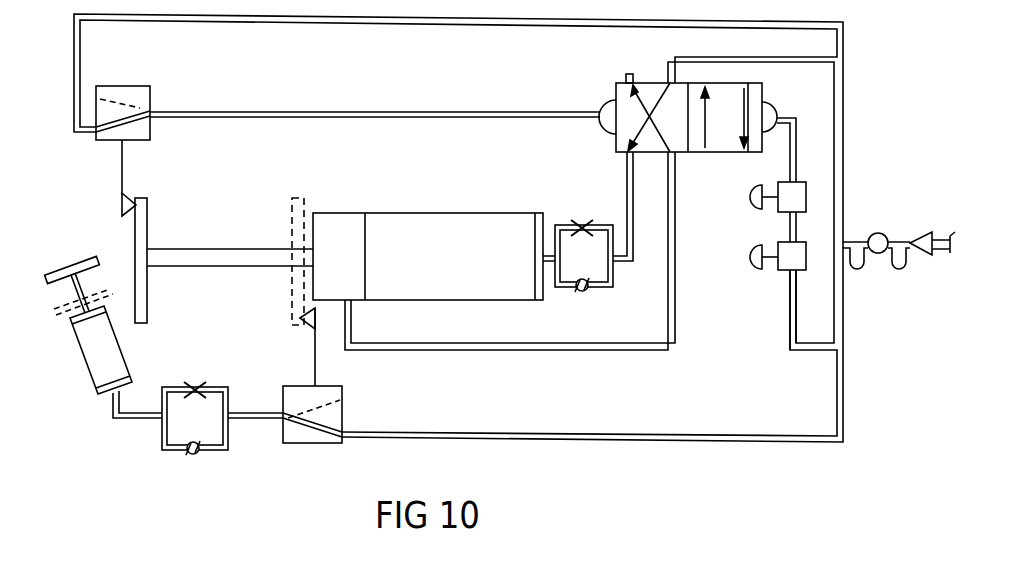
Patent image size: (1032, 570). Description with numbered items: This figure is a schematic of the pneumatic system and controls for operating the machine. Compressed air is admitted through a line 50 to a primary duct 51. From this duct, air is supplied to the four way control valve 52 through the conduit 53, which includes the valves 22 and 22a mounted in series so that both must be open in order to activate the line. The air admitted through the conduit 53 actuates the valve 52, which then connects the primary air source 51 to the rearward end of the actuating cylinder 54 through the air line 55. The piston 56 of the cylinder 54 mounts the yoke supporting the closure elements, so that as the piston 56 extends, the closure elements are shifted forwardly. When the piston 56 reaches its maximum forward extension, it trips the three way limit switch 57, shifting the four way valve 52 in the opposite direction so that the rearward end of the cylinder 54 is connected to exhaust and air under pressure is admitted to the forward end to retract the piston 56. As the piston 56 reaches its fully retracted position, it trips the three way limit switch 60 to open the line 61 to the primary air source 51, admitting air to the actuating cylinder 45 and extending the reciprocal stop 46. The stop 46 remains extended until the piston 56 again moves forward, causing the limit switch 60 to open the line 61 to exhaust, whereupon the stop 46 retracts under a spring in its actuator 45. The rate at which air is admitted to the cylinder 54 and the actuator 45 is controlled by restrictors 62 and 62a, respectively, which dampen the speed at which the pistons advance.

The primary duct 51 is at (843, 95).
The three way limit switch 57 is at (140, 130).
The piston 56 is at (212, 257).
The reciprocal stop 46 is at (70, 266).
The actuating cylinder 45 is at (123, 348).
The restrictor 62a is at (196, 388).
The line 61 is at (253, 423).
The three way limit switch 60 is at (342, 392).
The actuating cylinder 54 is at (455, 208).
The restrictor 62 is at (583, 224).
The air line 55 is at (627, 166).
The four way control valve 52 is at (738, 158).
The valve 22 is at (778, 205).
The valve 22a is at (778, 267).
The conduit 53 is at (790, 337).
The line 50 is at (947, 254).